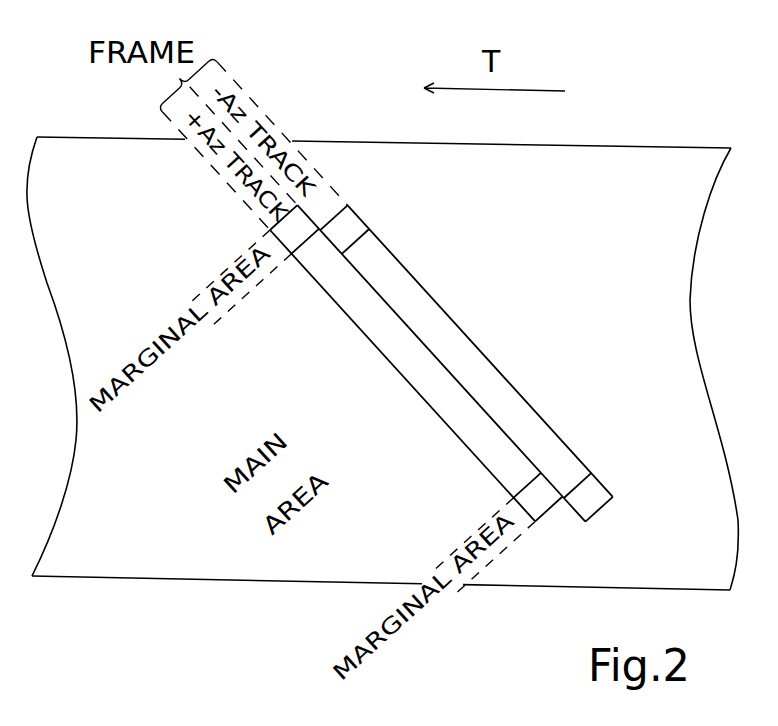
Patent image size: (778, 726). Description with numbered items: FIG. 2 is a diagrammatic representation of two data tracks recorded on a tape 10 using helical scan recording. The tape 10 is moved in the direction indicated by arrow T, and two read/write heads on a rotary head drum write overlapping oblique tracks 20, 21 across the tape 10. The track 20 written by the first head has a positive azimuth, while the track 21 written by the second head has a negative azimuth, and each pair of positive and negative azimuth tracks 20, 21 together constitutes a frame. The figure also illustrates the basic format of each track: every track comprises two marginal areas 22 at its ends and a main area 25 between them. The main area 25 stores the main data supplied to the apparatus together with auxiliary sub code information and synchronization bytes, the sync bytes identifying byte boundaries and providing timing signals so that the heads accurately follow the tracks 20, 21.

The tape 10 is at (638, 145).
The positive azimuth track 20 is at (416, 363).
The negative azimuth track 21 is at (504, 355).
The marginal areas 22 is at (285, 235).
The main area 25 is at (428, 393).